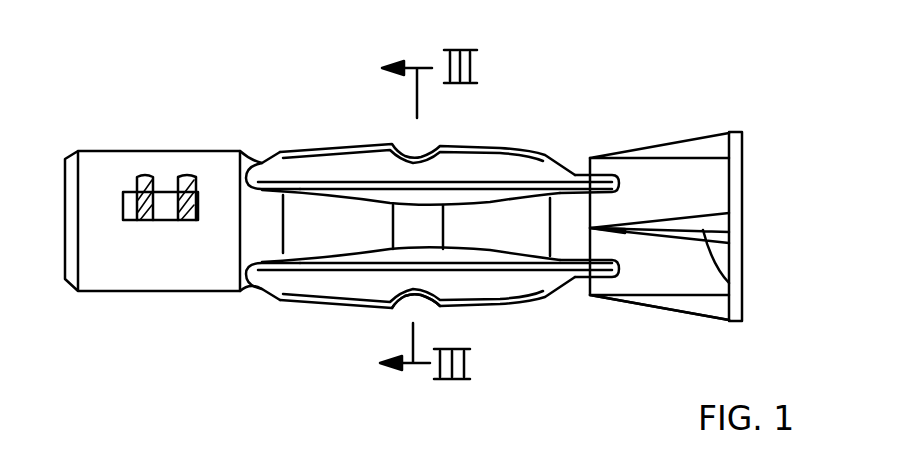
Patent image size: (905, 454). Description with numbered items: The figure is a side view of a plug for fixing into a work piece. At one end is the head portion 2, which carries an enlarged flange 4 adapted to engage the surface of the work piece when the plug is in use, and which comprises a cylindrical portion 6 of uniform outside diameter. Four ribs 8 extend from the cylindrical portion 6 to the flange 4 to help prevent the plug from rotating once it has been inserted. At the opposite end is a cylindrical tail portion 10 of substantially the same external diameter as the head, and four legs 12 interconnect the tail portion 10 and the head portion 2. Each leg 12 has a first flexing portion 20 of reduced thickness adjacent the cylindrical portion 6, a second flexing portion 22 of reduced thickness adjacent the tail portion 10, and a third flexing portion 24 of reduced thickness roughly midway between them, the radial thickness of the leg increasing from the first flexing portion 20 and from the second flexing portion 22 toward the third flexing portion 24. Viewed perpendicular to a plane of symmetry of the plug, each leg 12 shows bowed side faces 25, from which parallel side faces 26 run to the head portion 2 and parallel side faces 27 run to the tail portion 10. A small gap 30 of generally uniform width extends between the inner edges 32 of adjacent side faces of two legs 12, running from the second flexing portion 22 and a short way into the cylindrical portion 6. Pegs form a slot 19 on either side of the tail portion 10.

The head portion 2 is at (665, 297).
The enlarged flange 4 is at (738, 133).
The cylindrical portion 6 is at (660, 190).
The ribs 8 is at (700, 308).
The tail portion 10 is at (110, 268).
The legs 12 is at (355, 162).
The slot 19 is at (158, 208).
The first flexing portion 20 is at (565, 182).
The second flexing portion 22 is at (262, 160).
The third flexing portion 24 is at (420, 305).
The bowed side faces 25 is at (433, 200).
The parallel side faces 26 is at (545, 160).
The parallel side faces 27 is at (277, 163).
The gap 30 is at (340, 266).
The inner edges 32 is at (381, 190).